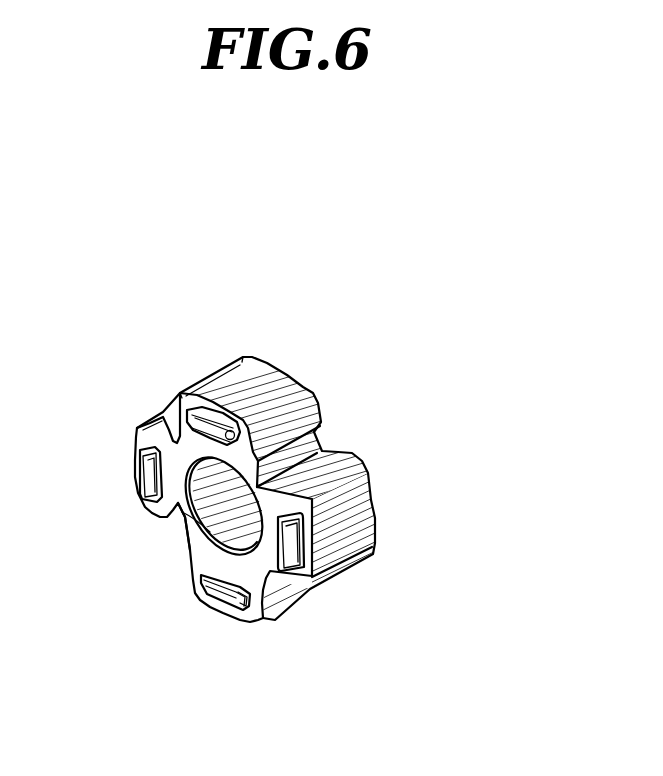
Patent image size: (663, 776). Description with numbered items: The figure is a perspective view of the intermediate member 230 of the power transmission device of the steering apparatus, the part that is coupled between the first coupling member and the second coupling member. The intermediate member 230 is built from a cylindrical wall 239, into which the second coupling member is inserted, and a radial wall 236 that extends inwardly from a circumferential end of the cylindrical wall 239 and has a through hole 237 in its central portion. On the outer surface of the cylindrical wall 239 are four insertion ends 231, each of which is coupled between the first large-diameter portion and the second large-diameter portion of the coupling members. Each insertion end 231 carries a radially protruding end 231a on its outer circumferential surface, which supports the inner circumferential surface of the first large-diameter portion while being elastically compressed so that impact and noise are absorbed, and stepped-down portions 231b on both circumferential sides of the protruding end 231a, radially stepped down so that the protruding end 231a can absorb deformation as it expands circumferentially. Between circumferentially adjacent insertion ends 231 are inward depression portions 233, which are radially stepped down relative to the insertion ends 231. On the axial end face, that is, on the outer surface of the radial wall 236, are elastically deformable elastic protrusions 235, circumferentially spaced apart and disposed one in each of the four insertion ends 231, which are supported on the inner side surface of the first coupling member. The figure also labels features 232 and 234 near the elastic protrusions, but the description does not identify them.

The intermediate member 230 is at (113, 243).
The insertion end 231 is at (328, 312).
The protruding end 231a is at (255, 374).
The stepped-down portion 231b is at (212, 374).
The hook tip 232 is at (248, 608).
The inward depression portion 233 is at (340, 450).
The lower clip 234 is at (208, 606).
The elastic protrusion 235 is at (290, 546).
The radial wall 236 is at (182, 512).
The through hole 237 is at (192, 543).
The cylindrical wall 239 is at (208, 488).